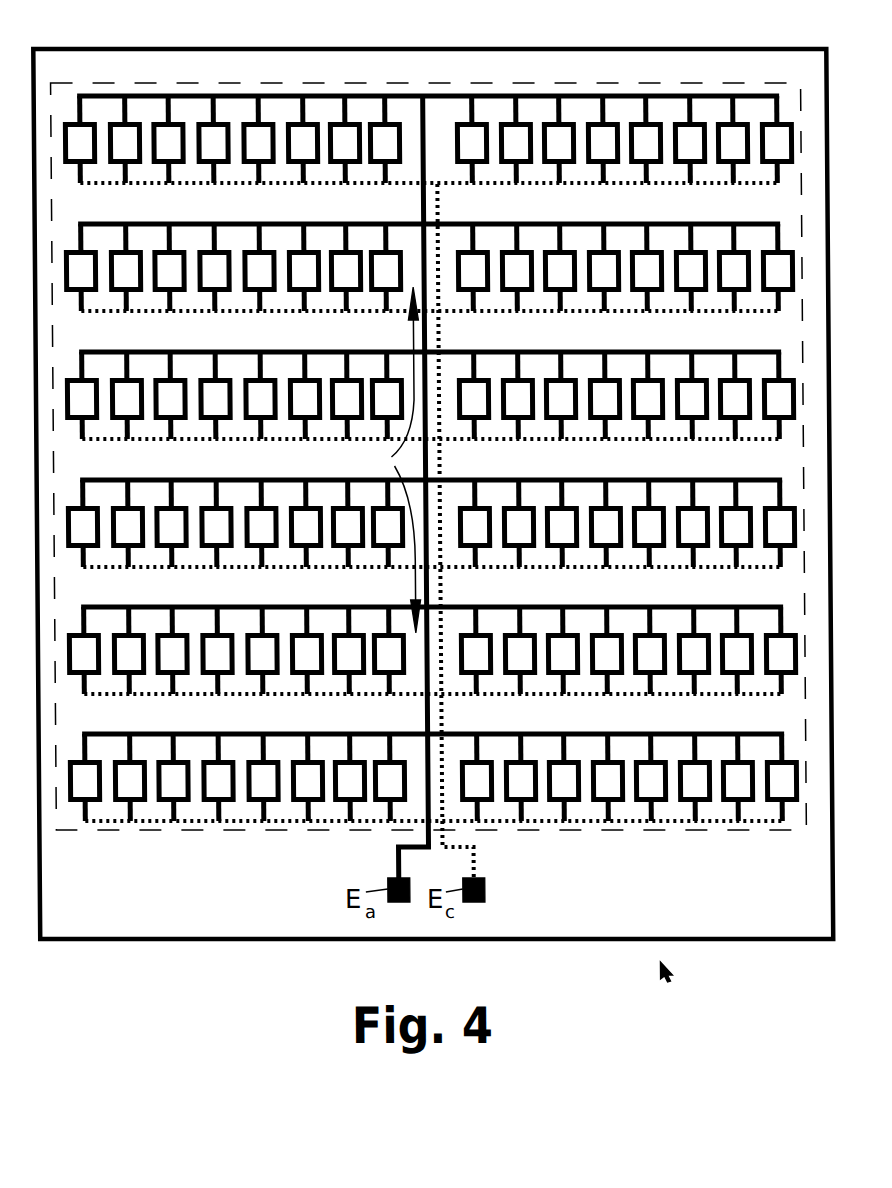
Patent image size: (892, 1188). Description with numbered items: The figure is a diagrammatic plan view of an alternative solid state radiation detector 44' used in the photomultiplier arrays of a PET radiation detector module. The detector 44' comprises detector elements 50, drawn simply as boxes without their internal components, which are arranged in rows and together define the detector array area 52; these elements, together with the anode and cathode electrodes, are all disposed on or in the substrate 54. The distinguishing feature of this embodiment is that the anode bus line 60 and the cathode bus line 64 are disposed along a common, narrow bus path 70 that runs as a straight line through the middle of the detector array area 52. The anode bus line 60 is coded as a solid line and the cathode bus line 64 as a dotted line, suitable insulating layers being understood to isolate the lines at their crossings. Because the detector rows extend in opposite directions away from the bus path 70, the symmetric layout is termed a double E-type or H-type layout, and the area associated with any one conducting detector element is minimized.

The solid state radiation detector 44' is at (677, 991).
The detector elements 50 is at (210, 790).
The detector array area 52 is at (520, 835).
The substrate 54 is at (729, 942).
The anode bus line 60 is at (421, 203).
The cathode bus line 64 is at (440, 207).
The bus path 70 is at (391, 460).